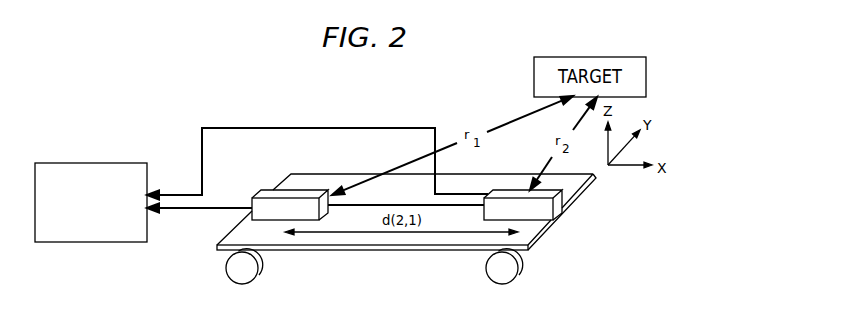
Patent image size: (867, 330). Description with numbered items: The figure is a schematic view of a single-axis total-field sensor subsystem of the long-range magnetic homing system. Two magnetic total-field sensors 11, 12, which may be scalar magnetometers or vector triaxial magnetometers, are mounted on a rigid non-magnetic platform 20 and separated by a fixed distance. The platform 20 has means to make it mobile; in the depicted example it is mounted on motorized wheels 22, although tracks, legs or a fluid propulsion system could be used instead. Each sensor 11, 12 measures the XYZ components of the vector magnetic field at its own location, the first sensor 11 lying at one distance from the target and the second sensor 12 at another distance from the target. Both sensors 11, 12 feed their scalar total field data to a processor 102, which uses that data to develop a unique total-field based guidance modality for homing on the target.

The processor 102 is at (86, 163).
The magnetic total-field sensor 11 is at (267, 190).
The magnetic total-field sensor 12 is at (504, 190).
The platform 20 is at (588, 191).
The wheels 22 is at (230, 282).